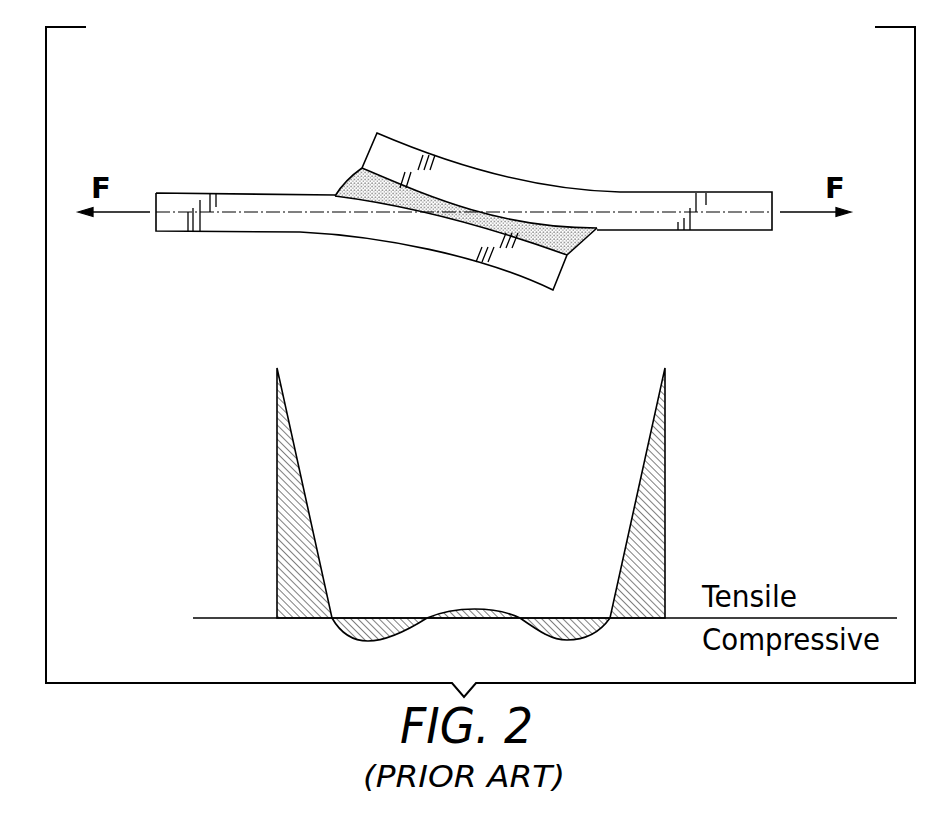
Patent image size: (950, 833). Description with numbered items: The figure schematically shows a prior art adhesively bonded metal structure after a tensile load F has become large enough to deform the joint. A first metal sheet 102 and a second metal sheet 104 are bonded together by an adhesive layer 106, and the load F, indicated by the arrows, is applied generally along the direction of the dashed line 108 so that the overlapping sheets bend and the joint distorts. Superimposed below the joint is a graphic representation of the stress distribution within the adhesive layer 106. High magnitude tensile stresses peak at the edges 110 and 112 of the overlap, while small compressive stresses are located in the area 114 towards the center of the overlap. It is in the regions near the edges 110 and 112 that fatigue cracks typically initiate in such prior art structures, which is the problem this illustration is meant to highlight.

The first metal sheet 102 is at (665, 202).
The second metal sheet 104 is at (303, 225).
The adhesive layer 106 is at (378, 188).
The dashed line 108 is at (715, 212).
The edge of the overlap 110 is at (337, 179).
The edge of the overlap 112 is at (580, 246).
The area towards the center of the overlap 114 is at (496, 151).